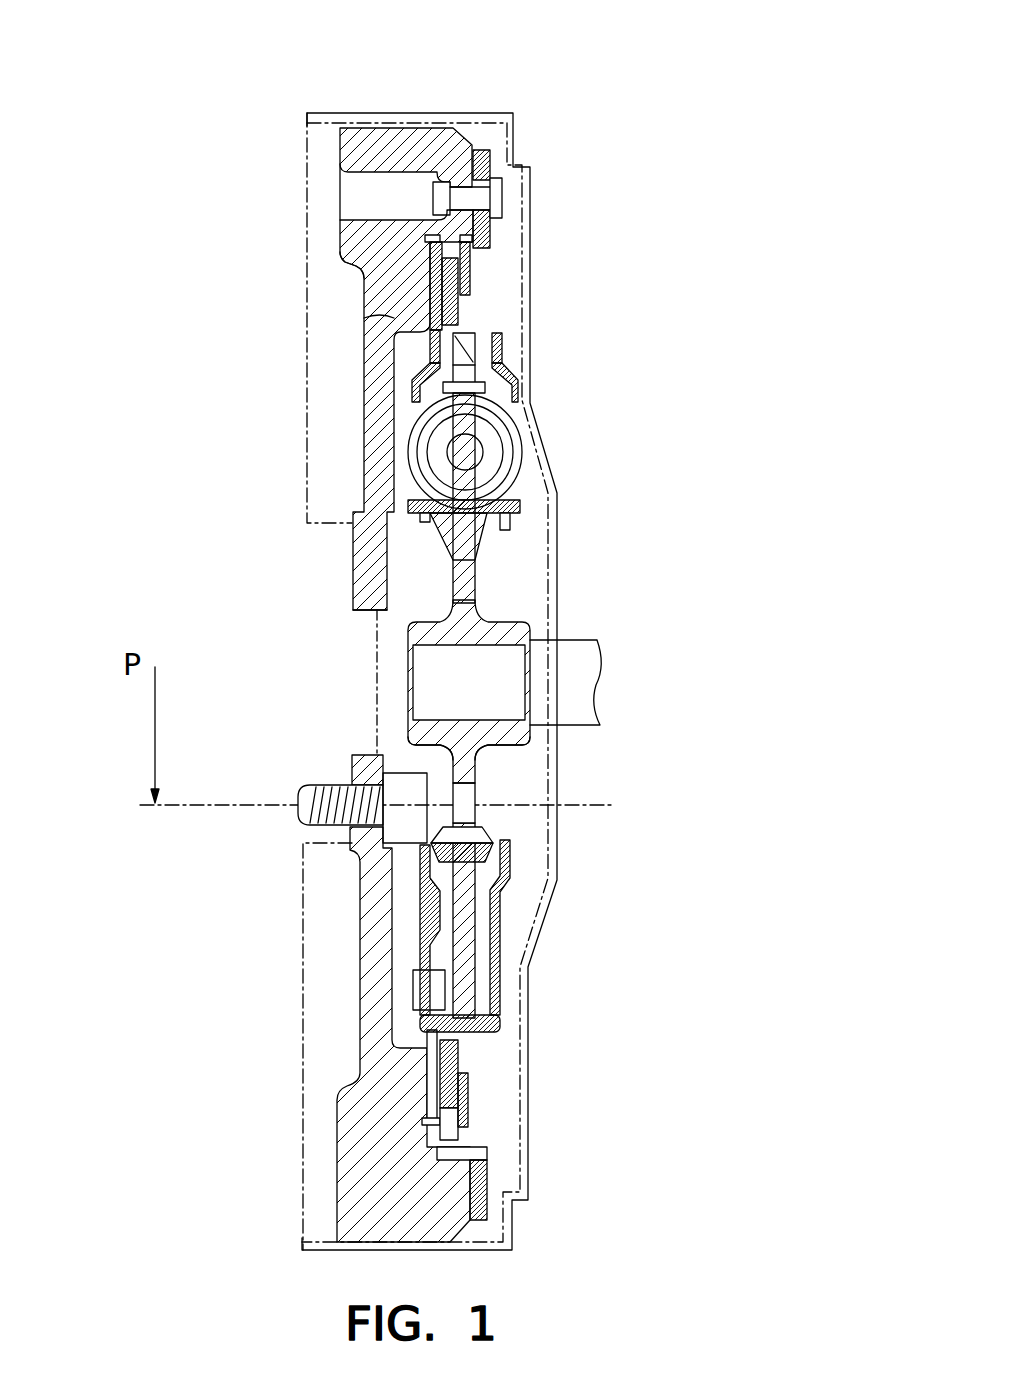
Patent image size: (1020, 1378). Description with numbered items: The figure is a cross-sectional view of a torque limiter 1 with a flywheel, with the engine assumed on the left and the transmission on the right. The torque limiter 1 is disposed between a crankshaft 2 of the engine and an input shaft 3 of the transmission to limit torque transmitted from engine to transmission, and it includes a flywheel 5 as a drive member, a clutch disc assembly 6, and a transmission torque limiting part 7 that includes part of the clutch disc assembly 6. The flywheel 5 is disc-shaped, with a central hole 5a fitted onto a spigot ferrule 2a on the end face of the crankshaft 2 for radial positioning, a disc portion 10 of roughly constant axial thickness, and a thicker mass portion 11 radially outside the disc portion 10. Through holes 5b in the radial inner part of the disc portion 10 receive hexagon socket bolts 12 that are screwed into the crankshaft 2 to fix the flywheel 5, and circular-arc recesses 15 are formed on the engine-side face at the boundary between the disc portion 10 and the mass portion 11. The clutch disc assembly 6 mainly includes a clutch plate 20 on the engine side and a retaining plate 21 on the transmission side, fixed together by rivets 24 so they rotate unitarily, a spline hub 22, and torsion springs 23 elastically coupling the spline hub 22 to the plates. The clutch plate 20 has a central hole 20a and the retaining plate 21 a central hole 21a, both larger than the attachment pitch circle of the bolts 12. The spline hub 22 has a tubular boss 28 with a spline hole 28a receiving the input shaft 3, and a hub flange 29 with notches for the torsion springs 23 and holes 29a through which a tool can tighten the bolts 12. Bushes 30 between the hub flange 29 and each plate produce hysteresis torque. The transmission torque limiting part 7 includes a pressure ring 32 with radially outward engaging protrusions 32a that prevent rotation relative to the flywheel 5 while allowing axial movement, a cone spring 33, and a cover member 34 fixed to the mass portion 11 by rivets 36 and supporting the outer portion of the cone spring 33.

The torque limiter 1 is at (510, 223).
The crankshaft 2 is at (342, 830).
The spigot ferrule 2a is at (362, 753).
The input shaft 3 is at (600, 640).
The flywheel 5 is at (466, 131).
The hole 5a is at (375, 611).
The through holes 5b is at (353, 783).
The clutch disc assembly 6 is at (506, 348).
The transmission torque limiting part 7 is at (498, 278).
The disc portion 10 is at (372, 380).
The mass portion 11 is at (400, 136).
The bolts 12 is at (313, 785).
The recesses 15 is at (400, 317).
The clutch plate 20 is at (395, 343).
The hole 20a is at (425, 822).
The retaining plate 21 is at (513, 370).
The hole 21a is at (500, 838).
The spline hub 22 is at (511, 746).
The torsion springs 23 is at (512, 445).
The rivets 24 is at (413, 997).
The boss 28 is at (503, 630).
The spline hole 28a is at (507, 717).
The hub flange 29 is at (488, 553).
The holes 29a is at (463, 818).
The bushes 30 is at (433, 522).
The pressure ring 32 is at (445, 307).
The engaging protrusions 32a is at (450, 1118).
The cone spring 33 is at (473, 260).
The cover member 34 is at (487, 157).
The rivets 36 is at (495, 193).